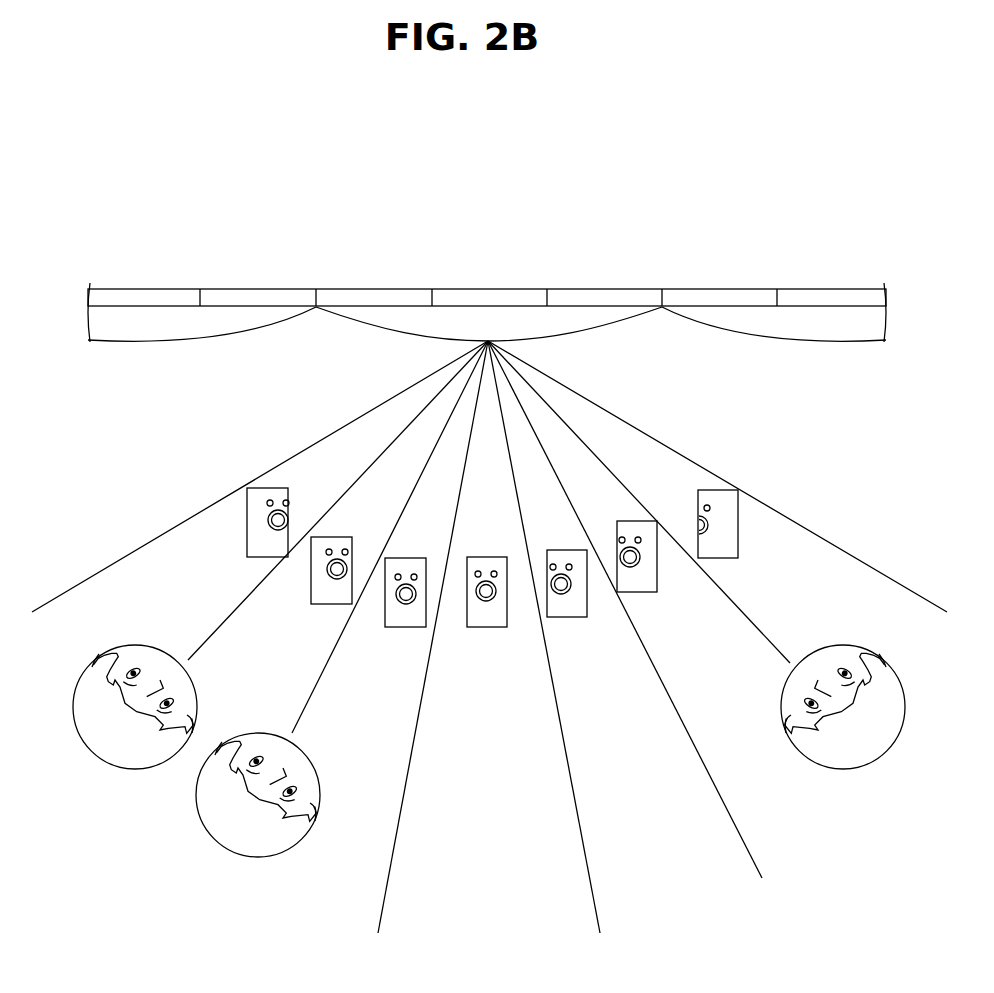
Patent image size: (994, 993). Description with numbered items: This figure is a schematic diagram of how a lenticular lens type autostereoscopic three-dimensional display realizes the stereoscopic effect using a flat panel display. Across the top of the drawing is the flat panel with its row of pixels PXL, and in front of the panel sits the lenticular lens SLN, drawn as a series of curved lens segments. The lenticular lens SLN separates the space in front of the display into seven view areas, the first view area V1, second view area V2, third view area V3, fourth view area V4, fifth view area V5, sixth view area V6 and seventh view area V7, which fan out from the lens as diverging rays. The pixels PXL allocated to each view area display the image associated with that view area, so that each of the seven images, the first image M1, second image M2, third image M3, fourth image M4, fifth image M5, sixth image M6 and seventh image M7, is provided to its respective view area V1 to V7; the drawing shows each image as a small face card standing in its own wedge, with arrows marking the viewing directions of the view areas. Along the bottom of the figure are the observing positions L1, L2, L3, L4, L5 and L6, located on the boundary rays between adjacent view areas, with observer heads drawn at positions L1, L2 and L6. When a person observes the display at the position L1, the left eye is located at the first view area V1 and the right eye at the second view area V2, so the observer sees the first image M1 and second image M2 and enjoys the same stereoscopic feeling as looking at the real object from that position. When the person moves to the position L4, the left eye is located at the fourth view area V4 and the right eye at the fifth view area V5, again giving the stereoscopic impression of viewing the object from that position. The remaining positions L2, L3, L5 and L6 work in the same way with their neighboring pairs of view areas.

The pixels PXL is at (373, 296).
The lenticular lens SLN is at (505, 299).
The first image M1 is at (288, 500).
The second image M2 is at (348, 537).
The third image M3 is at (413, 558).
The fourth image M4 is at (487, 557).
The fifth image M5 is at (562, 550).
The sixth image M6 is at (617, 521).
The seventh image M7 is at (700, 500).
The first view area V1 is at (205, 565).
The second view area V2 is at (283, 638).
The third view area V3 is at (380, 660).
The fourth view area V4 is at (488, 678).
The fifth view area V5 is at (598, 660).
The sixth view area V6 is at (687, 620).
The seventh view area V7 is at (775, 565).
The position L1 is at (100, 760).
The position L2 is at (230, 853).
The position L3 is at (424, 653).
The position L4 is at (551, 653).
The position L5 is at (631, 628).
The position L6 is at (880, 758).